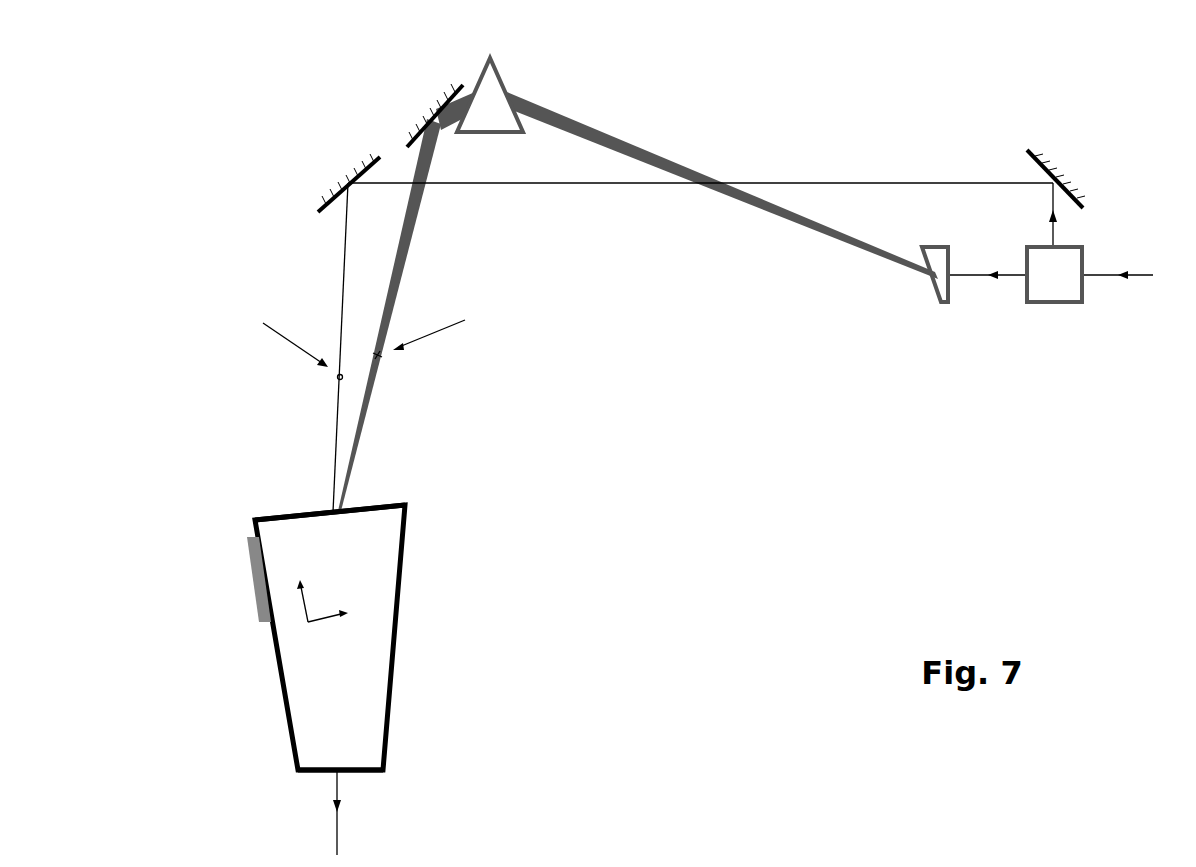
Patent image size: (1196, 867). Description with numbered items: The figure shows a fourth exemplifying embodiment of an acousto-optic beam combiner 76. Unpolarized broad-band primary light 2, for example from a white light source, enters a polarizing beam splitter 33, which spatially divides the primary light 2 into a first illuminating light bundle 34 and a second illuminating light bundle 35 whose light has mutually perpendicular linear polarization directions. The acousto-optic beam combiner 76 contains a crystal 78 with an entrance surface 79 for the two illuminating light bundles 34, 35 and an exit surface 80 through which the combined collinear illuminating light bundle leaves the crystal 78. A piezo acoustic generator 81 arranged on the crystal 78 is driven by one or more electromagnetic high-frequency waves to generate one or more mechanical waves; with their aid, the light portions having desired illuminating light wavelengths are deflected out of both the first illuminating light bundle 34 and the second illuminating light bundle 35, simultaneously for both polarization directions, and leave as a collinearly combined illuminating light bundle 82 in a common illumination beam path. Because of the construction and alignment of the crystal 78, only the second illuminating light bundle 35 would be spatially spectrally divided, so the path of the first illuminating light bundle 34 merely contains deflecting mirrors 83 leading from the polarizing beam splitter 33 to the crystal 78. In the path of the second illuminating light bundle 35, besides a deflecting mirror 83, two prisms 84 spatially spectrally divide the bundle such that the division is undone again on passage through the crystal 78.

The primary light 2 is at (1110, 273).
The polarizing beam splitter 33 is at (1047, 287).
The first illuminating light bundle 34 is at (827, 183).
The second illuminating light bundle 35 is at (973, 277).
The acousto-optic beam combiner 76 is at (859, 493).
The crystal 78 is at (372, 682).
The entrance surface 79 is at (377, 503).
The exit surface 80 is at (305, 773).
The piezo acoustic generator 81 is at (250, 557).
The collinearly combined illuminating light bundle 82 is at (337, 818).
The deflecting mirror 83 is at (343, 180).
The prism 84 is at (495, 105).